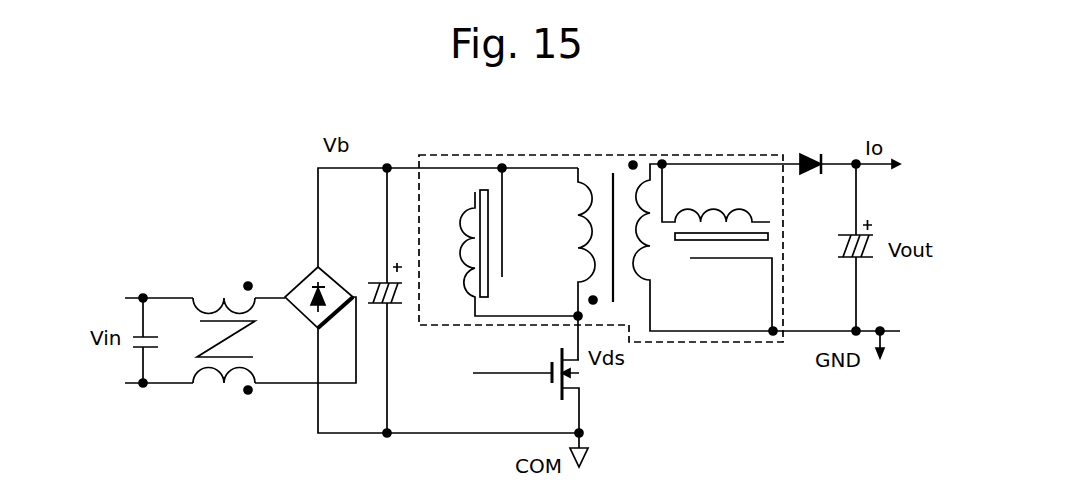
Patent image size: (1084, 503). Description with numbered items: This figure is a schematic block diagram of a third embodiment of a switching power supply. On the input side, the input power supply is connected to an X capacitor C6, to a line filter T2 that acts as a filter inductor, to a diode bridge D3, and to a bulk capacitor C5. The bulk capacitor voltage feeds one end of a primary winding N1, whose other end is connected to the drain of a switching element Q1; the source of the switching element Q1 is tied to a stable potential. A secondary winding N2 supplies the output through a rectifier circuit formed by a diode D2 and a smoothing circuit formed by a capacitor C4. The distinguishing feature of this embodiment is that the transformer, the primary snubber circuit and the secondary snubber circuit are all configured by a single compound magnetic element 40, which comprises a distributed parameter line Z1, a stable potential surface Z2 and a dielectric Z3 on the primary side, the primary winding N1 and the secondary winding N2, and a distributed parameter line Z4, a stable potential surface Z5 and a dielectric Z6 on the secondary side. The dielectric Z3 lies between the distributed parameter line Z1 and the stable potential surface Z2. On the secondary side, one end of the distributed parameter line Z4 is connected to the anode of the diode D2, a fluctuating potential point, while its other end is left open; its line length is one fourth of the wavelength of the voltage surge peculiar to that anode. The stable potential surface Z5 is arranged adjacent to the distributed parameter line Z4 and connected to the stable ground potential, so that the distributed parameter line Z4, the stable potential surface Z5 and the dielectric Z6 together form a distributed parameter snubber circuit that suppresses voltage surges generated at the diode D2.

The compound magnetic element 40 is at (487, 155).
The line filter T2 is at (217, 325).
The diode bridge D3 is at (310, 280).
The bulk capacitor C5 is at (396, 300).
The X capacitor C6 is at (142, 364).
The distributed parameter line Z1 is at (502, 254).
The stable potential surface Z2 is at (520, 222).
The dielectric Z3 is at (499, 251).
The primary winding N1 is at (569, 264).
The secondary winding N2 is at (703, 247).
The distributed parameter line Z4 is at (716, 193).
The stable potential surface Z5 is at (731, 294).
The dielectric Z6 is at (712, 255).
The switching element Q1 is at (526, 398).
The diode D2 is at (812, 150).
The capacitor C4 is at (845, 247).